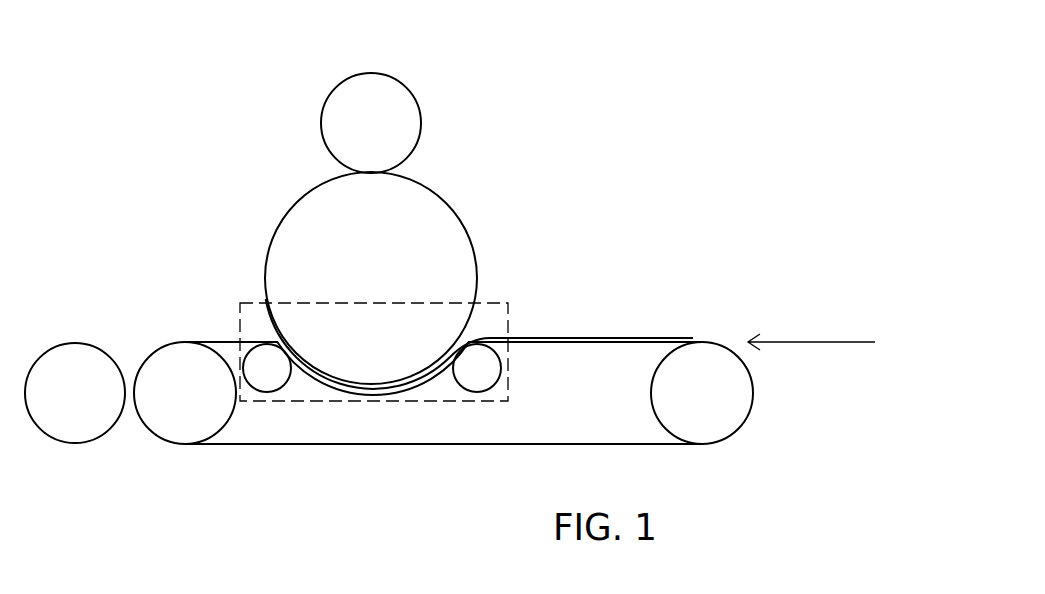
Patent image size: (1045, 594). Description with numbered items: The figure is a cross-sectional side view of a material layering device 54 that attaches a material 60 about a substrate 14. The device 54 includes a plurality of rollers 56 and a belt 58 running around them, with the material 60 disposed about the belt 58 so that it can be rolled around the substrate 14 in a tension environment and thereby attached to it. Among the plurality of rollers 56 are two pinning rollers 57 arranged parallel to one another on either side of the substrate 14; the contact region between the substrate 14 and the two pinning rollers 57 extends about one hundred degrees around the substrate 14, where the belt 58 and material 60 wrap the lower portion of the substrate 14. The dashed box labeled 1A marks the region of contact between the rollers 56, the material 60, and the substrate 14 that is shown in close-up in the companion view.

The material layering device 54 is at (626, 98).
The substrate 14 is at (388, 248).
The rollers 56 is at (388, 133).
The pinning rollers 57 is at (253, 381).
The belt 58 is at (407, 445).
The material 60 is at (566, 337).
The detail region of FIG. 1A is at (492, 303).